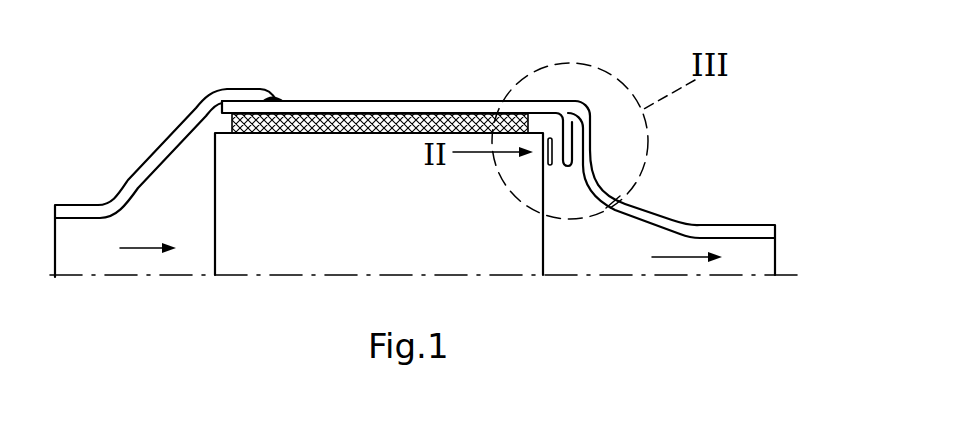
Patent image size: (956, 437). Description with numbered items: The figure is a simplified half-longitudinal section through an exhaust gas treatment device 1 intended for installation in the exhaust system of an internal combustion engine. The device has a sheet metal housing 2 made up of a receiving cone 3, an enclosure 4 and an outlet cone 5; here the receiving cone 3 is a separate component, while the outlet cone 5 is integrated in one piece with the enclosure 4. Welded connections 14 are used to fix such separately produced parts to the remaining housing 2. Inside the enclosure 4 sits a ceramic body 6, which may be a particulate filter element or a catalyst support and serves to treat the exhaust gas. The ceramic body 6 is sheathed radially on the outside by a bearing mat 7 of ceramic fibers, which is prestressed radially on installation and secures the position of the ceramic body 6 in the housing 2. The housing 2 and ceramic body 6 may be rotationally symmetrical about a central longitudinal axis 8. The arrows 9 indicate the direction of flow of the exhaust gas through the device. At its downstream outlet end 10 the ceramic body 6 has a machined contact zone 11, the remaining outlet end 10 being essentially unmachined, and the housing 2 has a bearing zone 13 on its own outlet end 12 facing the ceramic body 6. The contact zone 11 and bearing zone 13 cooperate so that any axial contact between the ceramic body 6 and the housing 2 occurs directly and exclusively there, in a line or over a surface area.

The exhaust gas treatment device 1 is at (192, 337).
The housing 2 is at (330, 92).
The receiving cone 3 is at (153, 143).
The enclosure 4 is at (375, 100).
The outlet cone 5 is at (672, 215).
The ceramic body 6 is at (308, 256).
The bearing mat 7 is at (297, 133).
The central longitudinal axis 8 is at (610, 277).
The arrows / direction of flow 9 is at (139, 247).
The outlet end 10 is at (548, 240).
The contact zone 11 is at (548, 166).
The outlet end 12 is at (574, 168).
The bearing zone 13 is at (563, 128).
The welded connection 14 is at (274, 90).